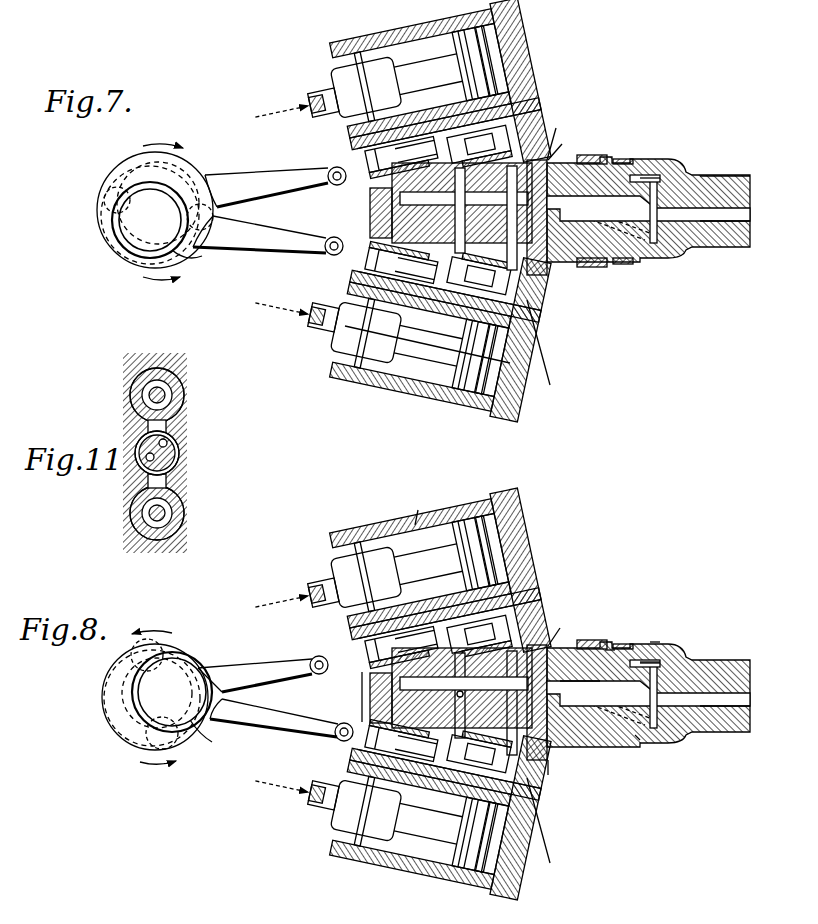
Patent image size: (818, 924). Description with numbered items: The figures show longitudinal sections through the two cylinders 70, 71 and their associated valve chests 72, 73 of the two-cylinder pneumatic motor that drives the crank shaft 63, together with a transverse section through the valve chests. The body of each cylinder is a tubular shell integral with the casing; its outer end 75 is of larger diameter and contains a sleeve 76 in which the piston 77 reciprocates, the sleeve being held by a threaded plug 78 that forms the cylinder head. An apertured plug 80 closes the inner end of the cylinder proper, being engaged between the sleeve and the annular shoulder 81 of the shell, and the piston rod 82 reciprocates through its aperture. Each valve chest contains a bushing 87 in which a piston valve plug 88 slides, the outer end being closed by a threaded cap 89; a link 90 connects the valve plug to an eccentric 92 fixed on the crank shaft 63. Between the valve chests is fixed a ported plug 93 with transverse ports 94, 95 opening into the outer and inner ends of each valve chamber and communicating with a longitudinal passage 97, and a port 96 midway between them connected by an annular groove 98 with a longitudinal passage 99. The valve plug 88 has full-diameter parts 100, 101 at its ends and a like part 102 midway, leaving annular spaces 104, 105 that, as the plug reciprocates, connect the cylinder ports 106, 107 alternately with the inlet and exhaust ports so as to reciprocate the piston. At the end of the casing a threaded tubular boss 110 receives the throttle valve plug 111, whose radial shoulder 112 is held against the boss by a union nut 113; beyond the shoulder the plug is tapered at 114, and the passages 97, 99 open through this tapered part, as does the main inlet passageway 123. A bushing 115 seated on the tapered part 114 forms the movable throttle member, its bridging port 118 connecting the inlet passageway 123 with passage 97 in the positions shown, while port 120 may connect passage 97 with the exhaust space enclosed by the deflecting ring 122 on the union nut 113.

In FIG. 7, the crank shaft 63 is at (100, 200).
In FIG. 8, the crank shaft 63 is at (97, 697).
In FIG. 7, the cylinder 70 is at (524, 14).
In FIG. 8, the cylinder 70 is at (524, 503).
In FIG. 7, the cylinder 71 is at (545, 322).
In FIG. 8, the cylinder 71 is at (533, 884).
In FIG. 7, the valve chest 72 is at (553, 100).
In FIG. 11, the valve chest 72 is at (186, 398).
In FIG. 8, the valve chest 72 is at (553, 585).
In FIG. 7, the valve chest 73 is at (560, 282).
In FIG. 11, the valve chest 73 is at (186, 522).
In FIG. 8, the valve chest 73 is at (572, 800).
In FIG. 8, the outer end of shell 75 is at (422, 506).
In FIG. 7, the sleeve 76 is at (470, 400).
In FIG. 7, the piston 77 is at (462, 32).
In FIG. 8, the piston 77 is at (470, 555).
In FIG. 7, the threaded plug 78 is at (530, 380).
In FIG. 8, the threaded plug 78 is at (530, 855).
In FIG. 7, the apertured plug 80 is at (366, 87).
In FIG. 8, the apertured plug 80 is at (372, 560).
In FIG. 7, the annular shoulder 81 is at (350, 386).
In FIG. 8, the annular shoulder 81 is at (333, 530).
In FIG. 7, the piston rod 82 is at (326, 96).
In FIG. 8, the piston rod 82 is at (326, 583).
In FIG. 7, the bushing 87 is at (548, 300).
In FIG. 11, the bushing 87 is at (148, 378).
In FIG. 8, the bushing 87 is at (340, 745).
In FIG. 7, the piston valve plug 88 is at (330, 170).
In FIG. 11, the piston valve plug 88 is at (160, 392).
In FIG. 8, the piston valve plug 88 is at (322, 655).
In FIG. 8, the threaded cap 89 is at (550, 765).
In FIG. 7, the link 90 is at (270, 178).
In FIG. 8, the link 90 is at (245, 662).
In FIG. 7, the eccentric 92 is at (186, 252).
In FIG. 8, the eccentric 92 is at (176, 704).
In FIG. 7, the ported plug 93 is at (368, 209).
In FIG. 11, the ported plug 93 is at (168, 445).
In FIG. 8, the ported plug 93 is at (366, 690).
In FIG. 7, the port 94 is at (564, 141).
In FIG. 8, the port 94 is at (600, 625).
In FIG. 8, the port 95 is at (327, 697).
In FIG. 7, the port 96 is at (447, 122).
In FIG. 11, the port 96 is at (168, 482).
In FIG. 8, the port 96 is at (385, 780).
In FIG. 7, the longitudinal passage 97 is at (572, 150).
In FIG. 11, the longitudinal passage 97 is at (176, 453).
In FIG. 8, the longitudinal passage 97 is at (645, 740).
In FIG. 7, the annular groove 98 is at (560, 125).
In FIG. 11, the annular groove 98 is at (170, 468).
In FIG. 11, the longitudinal passage 99 is at (146, 453).
In FIG. 8, the longitudinal passage 99 is at (630, 742).
In FIG. 7, the full-diameter part 100 is at (394, 205).
In FIG. 8, the full-diameter part 100 is at (290, 797).
In FIG. 7, the full-diameter part 101 is at (479, 209).
In FIG. 8, the full-diameter part 101 is at (478, 640).
In FIG. 7, the full-diameter part 102 is at (445, 300).
In FIG. 8, the full-diameter part 102 is at (432, 772).
In FIG. 7, the annular space 104 is at (296, 311).
In FIG. 8, the annular space 104 is at (298, 789).
In FIG. 7, the annular space 105 is at (470, 315).
In FIG. 8, the annular space 105 is at (440, 800).
In FIG. 7, the cylinder port 106 is at (335, 345).
In FIG. 8, the cylinder port 106 is at (335, 815).
In FIG. 7, the cylinder port 107 is at (540, 95).
In FIG. 8, the cylinder port 107 is at (540, 590).
In FIG. 8, the tubular boss 110 is at (560, 665).
In FIG. 7, the throttle valve plug 111 is at (732, 175).
In FIG. 8, the throttle valve plug 111 is at (700, 685).
In FIG. 8, the radial shoulder 112 is at (612, 647).
In FIG. 7, the union nut 113 is at (600, 158).
In FIG. 8, the union nut 113 is at (600, 640).
In FIG. 8, the tapered part 114 is at (650, 660).
In FIG. 7, the bushing 115 is at (722, 190).
In FIG. 7, the bridging port 118 is at (650, 176).
In FIG. 8, the bridging port 118 is at (660, 661).
In FIG. 7, the port 120 is at (650, 262).
In FIG. 8, the deflecting ring 122 is at (656, 640).
In FIG. 7, the longitudinal passageway 123 is at (725, 224).
In FIG. 8, the longitudinal passageway 123 is at (718, 708).